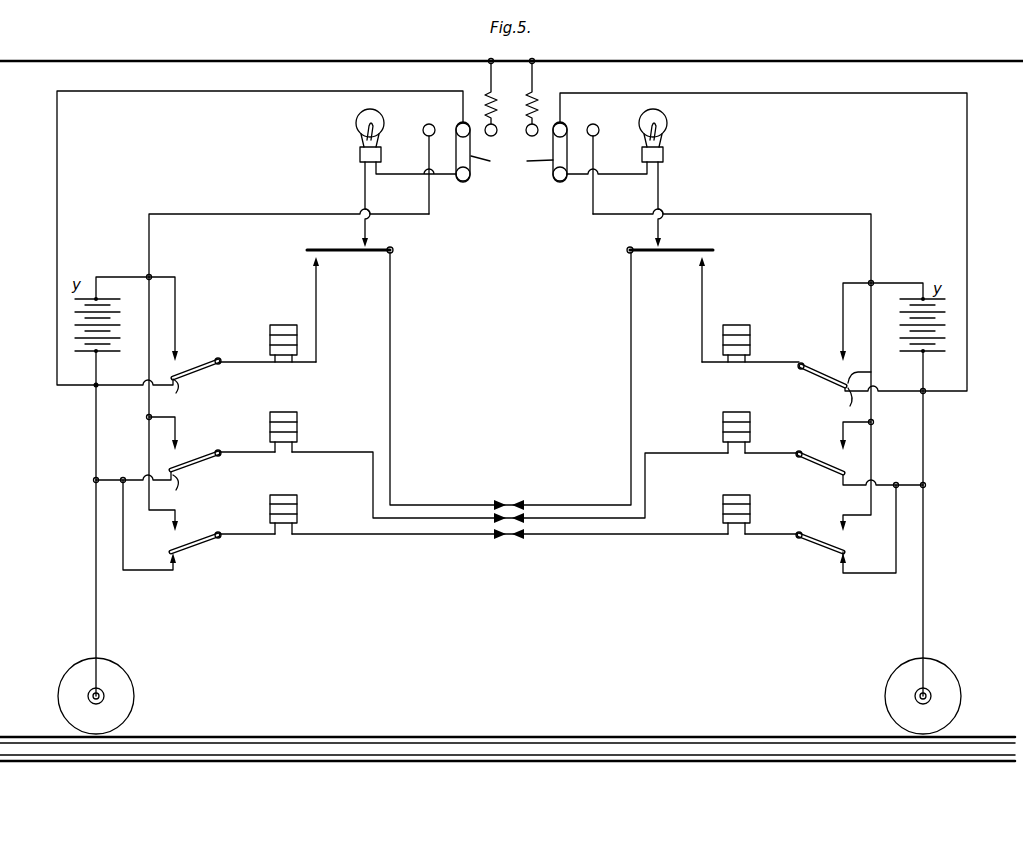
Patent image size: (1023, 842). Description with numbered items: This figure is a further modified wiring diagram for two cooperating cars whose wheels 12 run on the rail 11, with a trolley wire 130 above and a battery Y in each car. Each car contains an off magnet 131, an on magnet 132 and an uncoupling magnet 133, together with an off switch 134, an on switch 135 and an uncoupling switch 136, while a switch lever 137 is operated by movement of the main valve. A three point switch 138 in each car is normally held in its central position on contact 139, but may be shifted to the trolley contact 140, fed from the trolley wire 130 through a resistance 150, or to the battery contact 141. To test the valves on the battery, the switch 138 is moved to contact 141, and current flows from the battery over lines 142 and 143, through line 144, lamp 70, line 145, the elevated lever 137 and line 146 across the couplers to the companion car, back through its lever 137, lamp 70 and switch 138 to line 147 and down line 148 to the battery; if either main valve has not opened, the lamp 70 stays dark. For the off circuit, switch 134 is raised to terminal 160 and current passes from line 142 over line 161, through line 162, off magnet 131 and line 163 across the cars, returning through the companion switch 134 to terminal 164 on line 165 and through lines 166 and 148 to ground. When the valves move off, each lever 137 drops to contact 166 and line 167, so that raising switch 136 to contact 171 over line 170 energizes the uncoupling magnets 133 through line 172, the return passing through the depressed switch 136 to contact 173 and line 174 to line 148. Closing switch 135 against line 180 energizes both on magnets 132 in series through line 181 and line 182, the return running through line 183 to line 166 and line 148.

The trolley wire 130 is at (262, 61).
The resistance 150 is at (486, 95).
The trolley contact 140 is at (527, 135).
The contact 139 is at (458, 124).
The three point switch 138 is at (512, 162).
The battery contact 141 is at (424, 127).
The lamp 70 is at (668, 126).
The line 147 is at (244, 93).
The line 145 is at (364, 183).
The line 144 is at (612, 188).
The line 143 is at (246, 214).
The switch lever 137 is at (333, 248).
The line 146 is at (392, 400).
The contact / line 166 is at (312, 265).
The line 167 is at (320, 305).
The uncoupling magnet 133 is at (270, 333).
The line 172 is at (258, 363).
The line 170 is at (177, 305).
The contact 171 is at (178, 360).
The uncoupling switch 136 is at (205, 370).
The line 161 is at (876, 369).
The contact 173 is at (176, 390).
The line 142 is at (107, 277).
The line 174 is at (114, 386).
The line 180 is at (178, 420).
The on magnet 132 is at (300, 425).
The line 181 is at (255, 453).
The line 182 is at (330, 453).
The on switch 135 is at (196, 462).
The line 183 is at (176, 490).
The off magnet 131 is at (300, 508).
The line 162 is at (260, 539).
The line 163 is at (350, 539).
The off switch 134 is at (212, 544).
The line 165 is at (124, 540).
The terminal 164 is at (180, 558).
The terminal 160 is at (846, 530).
The line 148 is at (93, 546).
The wheel 12 is at (112, 669).
The rail 11 is at (282, 737).